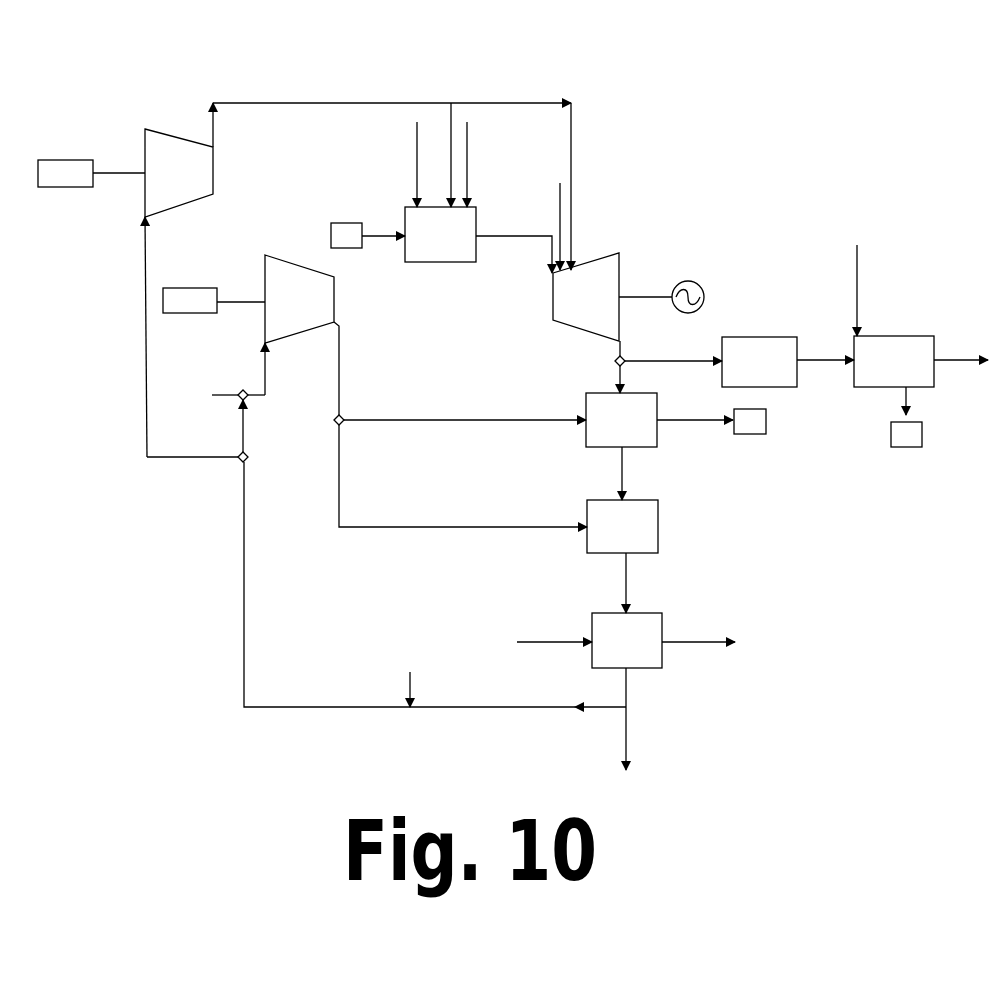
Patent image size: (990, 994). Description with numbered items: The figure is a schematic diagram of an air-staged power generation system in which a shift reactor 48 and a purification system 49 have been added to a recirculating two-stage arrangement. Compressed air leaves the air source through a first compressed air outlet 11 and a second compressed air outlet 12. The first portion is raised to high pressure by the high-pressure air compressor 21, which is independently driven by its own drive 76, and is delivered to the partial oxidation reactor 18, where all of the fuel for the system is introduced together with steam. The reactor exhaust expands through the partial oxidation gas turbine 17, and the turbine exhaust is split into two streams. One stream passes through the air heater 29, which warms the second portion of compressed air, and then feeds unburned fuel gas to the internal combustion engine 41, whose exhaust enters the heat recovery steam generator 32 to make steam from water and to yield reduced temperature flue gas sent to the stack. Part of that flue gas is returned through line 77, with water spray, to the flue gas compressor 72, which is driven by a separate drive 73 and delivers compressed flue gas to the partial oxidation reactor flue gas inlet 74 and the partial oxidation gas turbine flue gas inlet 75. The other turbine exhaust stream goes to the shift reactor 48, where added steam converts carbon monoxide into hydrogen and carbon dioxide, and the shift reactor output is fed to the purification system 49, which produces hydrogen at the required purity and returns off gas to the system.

The first compressed air outlet 11 is at (339, 418).
The second compressed air outlet 12 is at (339, 423).
The partial oxidation gas turbine 17 is at (622, 263).
The partial oxidation reactor 18 is at (447, 262).
The high-pressure air compressor 21 is at (290, 262).
The air heater 29 is at (657, 430).
The heat recovery steam generator 32 is at (662, 657).
The internal combustion engine 41 is at (658, 525).
The shift reactor 48 is at (755, 336).
The purification system 49 is at (907, 336).
The flue gas compressor 72 is at (175, 135).
The drive 73 is at (57, 187).
The partial oxidation reactor flue gas inlet 74 is at (447, 203).
The partial oxidation gas turbine flue gas inlet 75 is at (580, 267).
The drive 76 is at (193, 315).
The line 77 is at (243, 558).